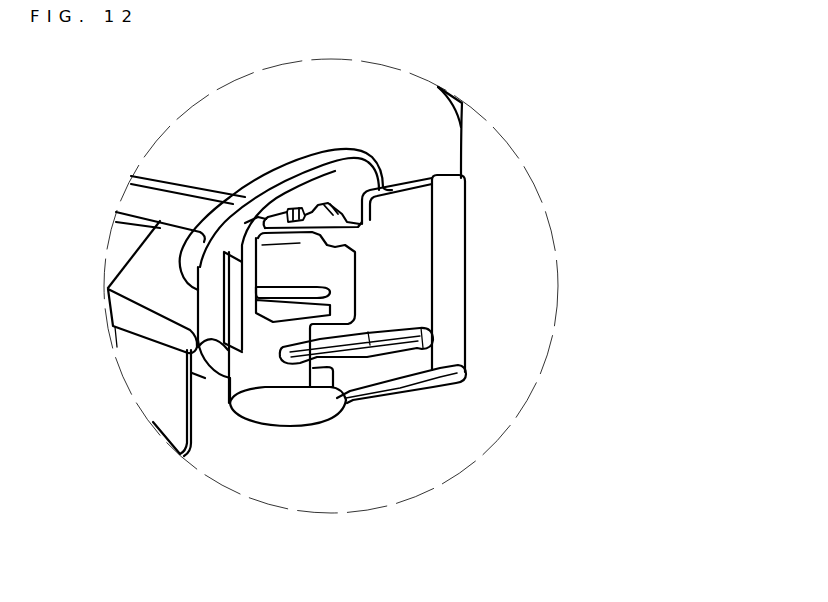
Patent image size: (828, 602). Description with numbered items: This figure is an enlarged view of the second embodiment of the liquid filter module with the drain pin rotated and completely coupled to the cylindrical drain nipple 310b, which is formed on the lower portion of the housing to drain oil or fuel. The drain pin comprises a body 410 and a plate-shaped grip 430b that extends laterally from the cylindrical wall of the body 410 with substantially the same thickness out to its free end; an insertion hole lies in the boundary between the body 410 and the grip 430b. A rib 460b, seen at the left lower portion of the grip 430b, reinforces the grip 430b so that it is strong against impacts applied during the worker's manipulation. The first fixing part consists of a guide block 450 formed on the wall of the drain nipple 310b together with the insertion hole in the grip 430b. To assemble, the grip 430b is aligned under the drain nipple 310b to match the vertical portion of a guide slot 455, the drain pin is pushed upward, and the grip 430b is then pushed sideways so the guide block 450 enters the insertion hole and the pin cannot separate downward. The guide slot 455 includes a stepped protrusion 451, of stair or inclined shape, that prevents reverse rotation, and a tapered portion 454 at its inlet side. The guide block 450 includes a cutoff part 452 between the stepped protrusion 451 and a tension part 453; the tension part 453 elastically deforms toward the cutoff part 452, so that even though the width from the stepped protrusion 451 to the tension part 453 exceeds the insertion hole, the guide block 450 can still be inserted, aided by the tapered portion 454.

The drain nipple 310b is at (203, 310).
The body 410 is at (280, 410).
The grip 430b is at (457, 343).
The guide block 450 is at (382, 228).
The stepped protrusion 451 is at (308, 238).
The cutoff part 452 is at (297, 293).
The tension part 453 is at (298, 305).
The tapered portion 454 is at (266, 247).
The guide slot 455 is at (109, 288).
The rib 460b is at (348, 355).